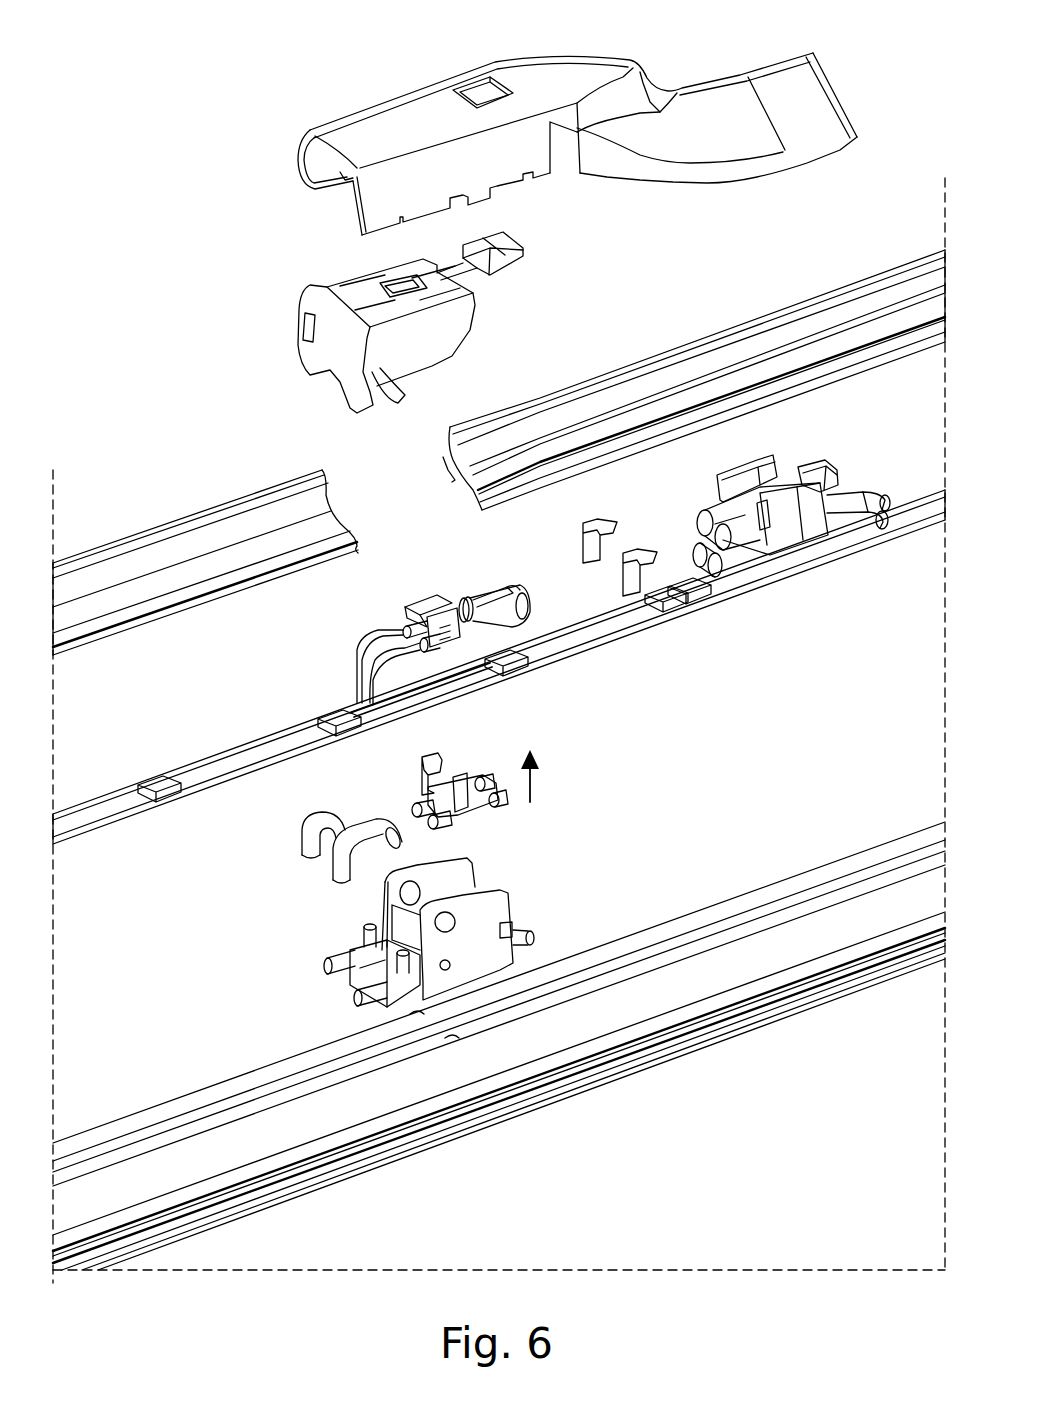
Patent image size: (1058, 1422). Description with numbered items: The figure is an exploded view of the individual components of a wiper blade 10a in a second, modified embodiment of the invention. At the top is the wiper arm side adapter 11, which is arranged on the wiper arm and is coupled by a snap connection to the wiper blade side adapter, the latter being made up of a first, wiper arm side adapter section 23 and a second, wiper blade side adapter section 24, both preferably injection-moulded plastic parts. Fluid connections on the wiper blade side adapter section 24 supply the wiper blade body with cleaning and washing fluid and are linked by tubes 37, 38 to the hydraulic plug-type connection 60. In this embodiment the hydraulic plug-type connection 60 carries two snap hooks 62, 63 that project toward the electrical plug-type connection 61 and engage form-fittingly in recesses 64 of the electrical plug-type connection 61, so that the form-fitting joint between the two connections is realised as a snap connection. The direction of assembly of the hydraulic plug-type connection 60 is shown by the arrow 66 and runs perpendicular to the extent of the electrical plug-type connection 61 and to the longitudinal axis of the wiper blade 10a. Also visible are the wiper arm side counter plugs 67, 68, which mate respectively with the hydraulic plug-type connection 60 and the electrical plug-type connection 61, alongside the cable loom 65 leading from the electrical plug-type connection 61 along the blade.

The wiper blade 10a is at (222, 254).
The wiper arm side adapter 11 is at (567, 72).
The wiper arm side adapter section 23 is at (450, 332).
The wiper blade side adapter section 24 is at (500, 910).
The tube 37 is at (302, 826).
The tube 38 is at (338, 852).
The hydraulic plug-type connection 60 is at (444, 774).
The electrical plug-type connection 61 is at (416, 617).
The snap hook 62 is at (497, 811).
The snap hook 63 is at (422, 763).
The recess 64 is at (430, 658).
The cable loom 65 is at (405, 620).
The arrow 66 is at (535, 797).
The wiper arm side counter plug 67 is at (763, 559).
The wiper arm side counter plug 68 is at (717, 505).